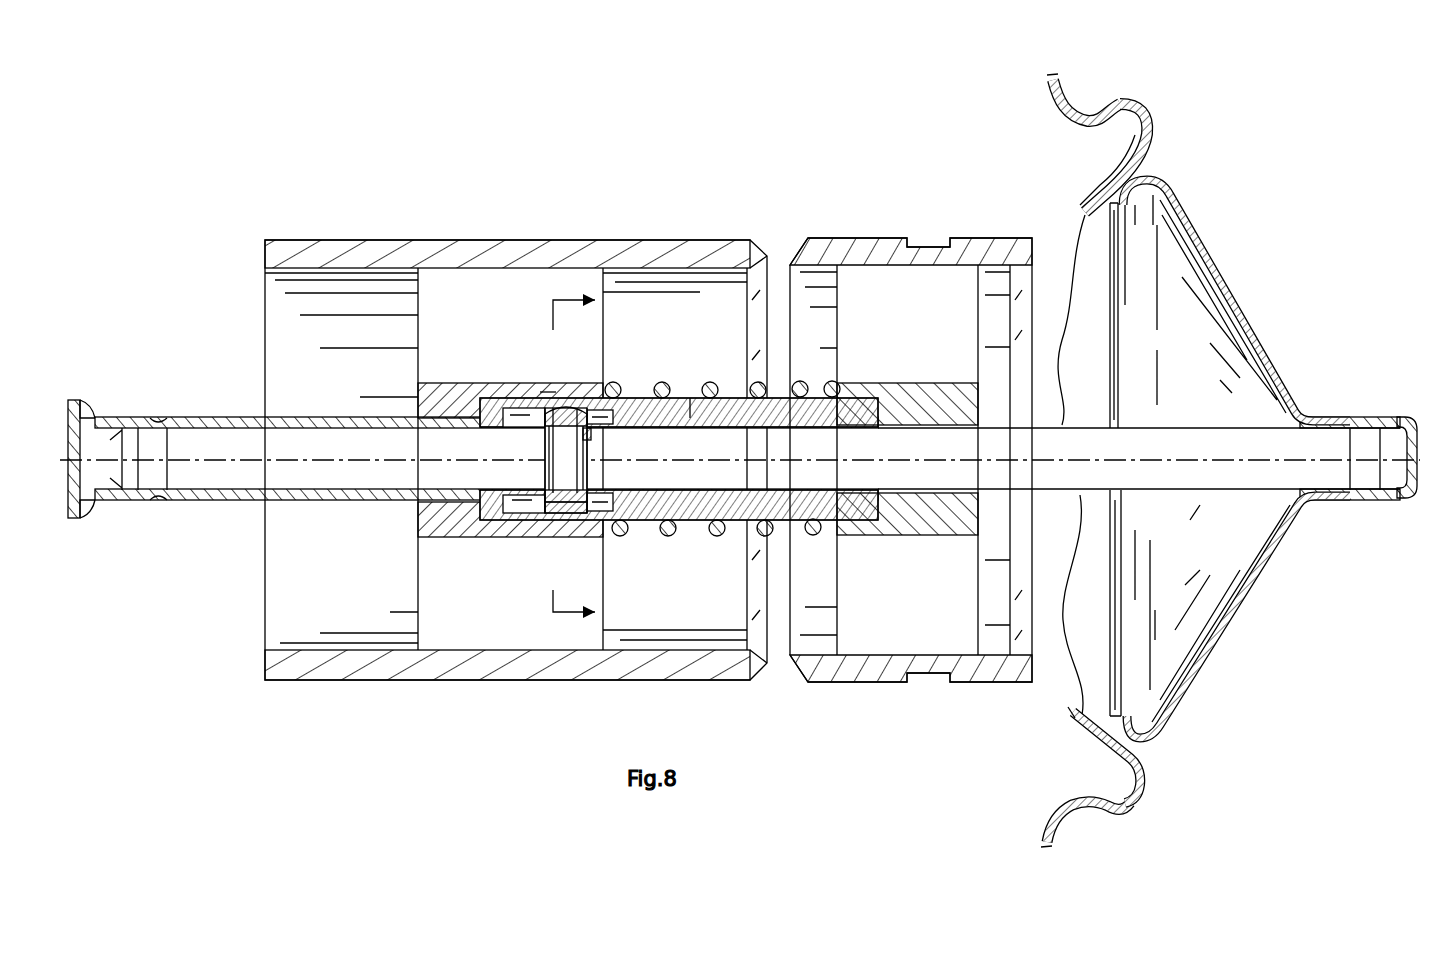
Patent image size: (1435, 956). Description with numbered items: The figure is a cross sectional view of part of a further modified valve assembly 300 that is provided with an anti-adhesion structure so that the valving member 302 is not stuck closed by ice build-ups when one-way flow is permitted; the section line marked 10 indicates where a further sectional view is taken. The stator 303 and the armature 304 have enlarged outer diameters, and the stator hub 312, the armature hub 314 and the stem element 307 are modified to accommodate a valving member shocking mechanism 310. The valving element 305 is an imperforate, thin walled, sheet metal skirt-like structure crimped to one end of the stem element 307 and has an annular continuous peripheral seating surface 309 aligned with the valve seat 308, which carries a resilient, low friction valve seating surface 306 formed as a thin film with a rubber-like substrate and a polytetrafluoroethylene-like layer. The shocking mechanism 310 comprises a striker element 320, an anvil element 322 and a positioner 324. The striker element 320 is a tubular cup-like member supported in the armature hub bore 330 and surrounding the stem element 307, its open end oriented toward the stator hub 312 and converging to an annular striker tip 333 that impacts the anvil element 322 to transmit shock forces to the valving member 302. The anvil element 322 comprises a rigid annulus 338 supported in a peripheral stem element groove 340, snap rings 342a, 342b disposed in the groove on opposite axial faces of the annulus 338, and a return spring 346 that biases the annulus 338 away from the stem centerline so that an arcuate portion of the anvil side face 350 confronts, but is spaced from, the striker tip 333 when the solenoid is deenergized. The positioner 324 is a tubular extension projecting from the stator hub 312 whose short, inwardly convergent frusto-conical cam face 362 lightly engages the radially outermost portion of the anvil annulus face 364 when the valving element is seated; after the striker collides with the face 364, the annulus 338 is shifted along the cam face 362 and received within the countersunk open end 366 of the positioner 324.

The valve assembly 300 is at (300, 203).
The valving member 302 is at (1250, 305).
The stator 303 is at (865, 683).
The armature 304 is at (487, 681).
The valving element 305 is at (1232, 600).
The valve seating surface 306 is at (1142, 158).
The stem element 307 is at (962, 475).
The valve seat 308 is at (1081, 93).
The peripheral seating surface 309 is at (1107, 748).
The valving member shocking mechanism 310 is at (512, 541).
The stator hub 312 is at (850, 538).
The armature hub 314 is at (452, 542).
The striker element 320 is at (497, 392).
The anvil element 322 is at (558, 405).
The positioner 324 is at (751, 395).
The armature hub bore 330 is at (495, 523).
The striker tip 333 is at (555, 390).
The rigid annulus 338 is at (592, 452).
The stem element groove 340 is at (560, 452).
The snap ring 342a is at (540, 492).
The snap ring 342b is at (595, 492).
The return spring 346 is at (582, 502).
The anvil side face 350 is at (556, 518).
The cam face 362 is at (567, 412).
The anvil annulus face 364 is at (652, 522).
The countersunk open end 366 is at (688, 410).
The section line 10 is at (594, 457).